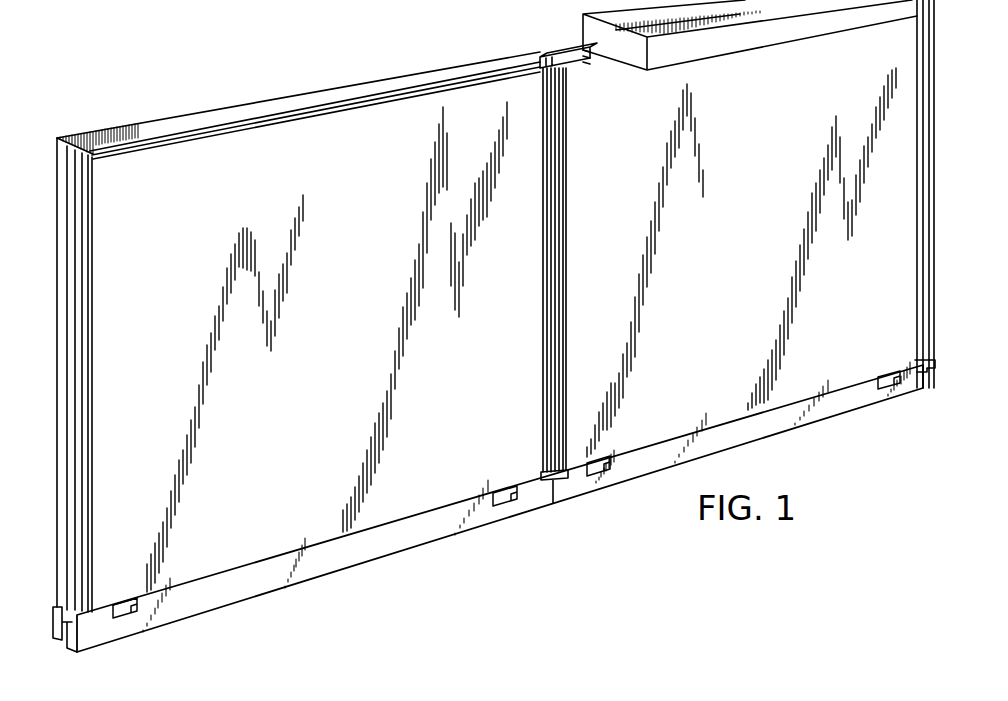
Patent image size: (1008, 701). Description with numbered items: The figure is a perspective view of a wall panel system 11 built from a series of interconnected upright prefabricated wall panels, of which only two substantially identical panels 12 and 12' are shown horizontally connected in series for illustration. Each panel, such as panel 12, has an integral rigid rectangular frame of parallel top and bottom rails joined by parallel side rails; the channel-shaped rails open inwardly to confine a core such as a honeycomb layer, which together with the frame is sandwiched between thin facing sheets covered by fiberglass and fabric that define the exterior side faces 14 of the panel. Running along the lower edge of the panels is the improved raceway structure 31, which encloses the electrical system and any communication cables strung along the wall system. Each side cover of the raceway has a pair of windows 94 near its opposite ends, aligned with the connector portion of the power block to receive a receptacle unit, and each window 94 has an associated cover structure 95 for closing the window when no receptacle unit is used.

The wall panel system 11 is at (272, 76).
The wall panel 12 is at (323, 104).
The wall panel 12' is at (539, 39).
The exterior side face 14 is at (521, 330).
The raceway structure 31 is at (362, 566).
The window 94 is at (120, 618).
The cover structure 95 is at (128, 594).